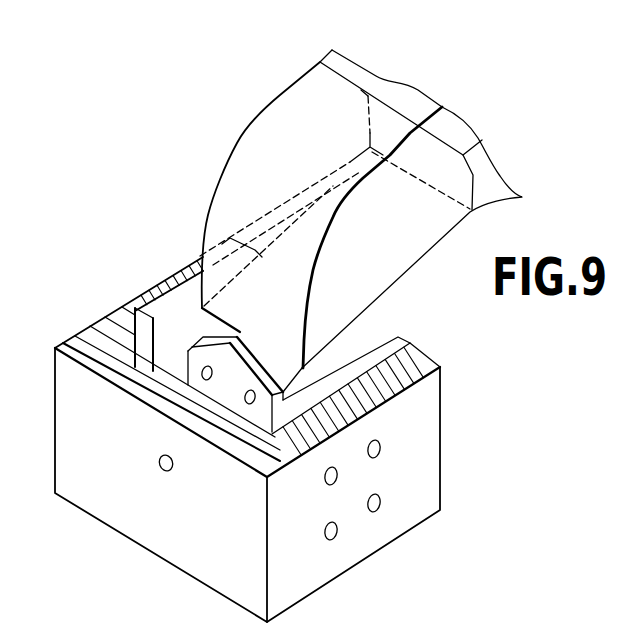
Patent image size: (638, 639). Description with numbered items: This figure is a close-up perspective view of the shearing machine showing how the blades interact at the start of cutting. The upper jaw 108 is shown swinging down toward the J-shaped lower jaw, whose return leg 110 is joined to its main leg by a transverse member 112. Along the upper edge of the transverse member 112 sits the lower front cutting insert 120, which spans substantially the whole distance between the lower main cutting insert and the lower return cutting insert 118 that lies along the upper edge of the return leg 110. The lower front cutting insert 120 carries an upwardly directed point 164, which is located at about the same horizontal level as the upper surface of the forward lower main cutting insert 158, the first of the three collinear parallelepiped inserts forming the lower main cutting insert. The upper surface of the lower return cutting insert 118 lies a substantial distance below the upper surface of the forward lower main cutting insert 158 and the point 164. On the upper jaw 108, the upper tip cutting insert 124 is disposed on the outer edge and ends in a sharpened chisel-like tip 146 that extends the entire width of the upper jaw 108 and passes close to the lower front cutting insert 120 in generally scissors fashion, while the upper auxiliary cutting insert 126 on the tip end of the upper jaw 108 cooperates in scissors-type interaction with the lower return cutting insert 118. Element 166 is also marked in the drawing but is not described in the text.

The upper jaw 108 is at (346, 64).
The return leg 110 is at (441, 420).
The transverse member 112 is at (157, 538).
The lower return cutting insert 118 is at (393, 337).
The lower front cutting insert 120 is at (183, 382).
The upper tip cutting insert 124 is at (240, 136).
The upper auxiliary cutting insert 126 is at (432, 103).
The tip 146 is at (307, 357).
The forward lower main cutting insert 158 is at (172, 289).
The point 164 is at (230, 338).
The element 166 is at (637, 620).